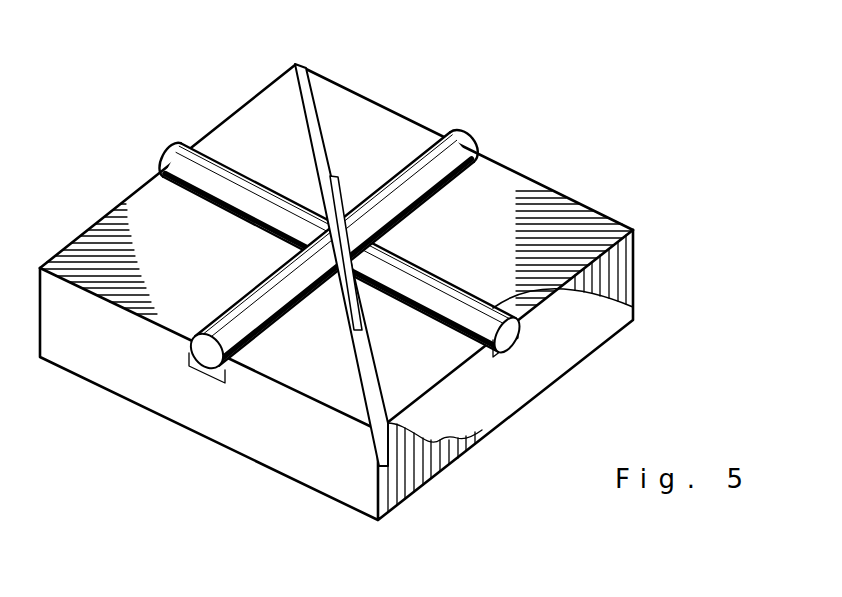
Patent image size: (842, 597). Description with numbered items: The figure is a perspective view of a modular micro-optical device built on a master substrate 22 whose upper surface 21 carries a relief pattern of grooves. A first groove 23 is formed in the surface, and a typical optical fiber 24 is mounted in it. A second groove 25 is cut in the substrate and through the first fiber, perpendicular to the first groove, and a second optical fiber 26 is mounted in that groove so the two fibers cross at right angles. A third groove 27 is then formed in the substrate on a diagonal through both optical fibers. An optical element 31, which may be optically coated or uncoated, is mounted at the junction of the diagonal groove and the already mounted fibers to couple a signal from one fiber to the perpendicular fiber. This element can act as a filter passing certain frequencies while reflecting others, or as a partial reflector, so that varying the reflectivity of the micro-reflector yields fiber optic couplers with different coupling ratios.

The surface 21 is at (543, 205).
The master substrate 22 is at (624, 265).
The groove 23 is at (213, 373).
The optical fiber 24 is at (462, 147).
The second groove 25 is at (518, 333).
The second optical fiber 26 is at (633, 307).
The third groove 27 is at (315, 122).
The optical element 31 is at (343, 192).